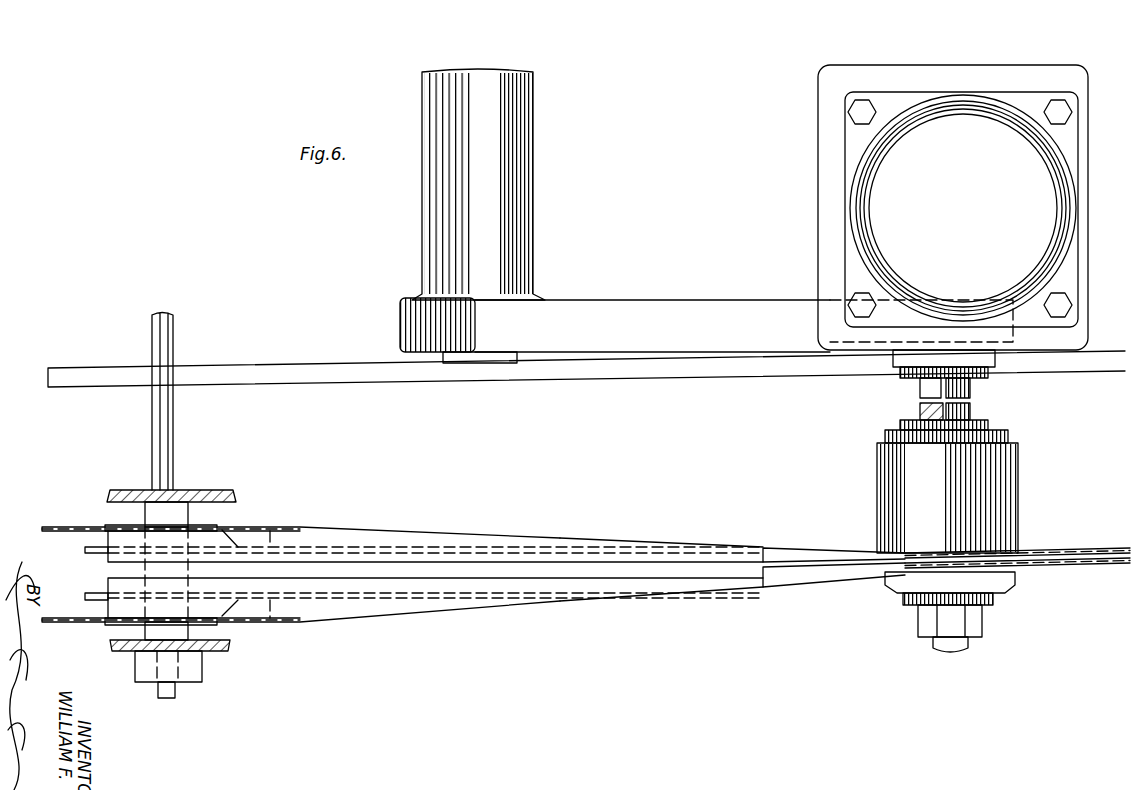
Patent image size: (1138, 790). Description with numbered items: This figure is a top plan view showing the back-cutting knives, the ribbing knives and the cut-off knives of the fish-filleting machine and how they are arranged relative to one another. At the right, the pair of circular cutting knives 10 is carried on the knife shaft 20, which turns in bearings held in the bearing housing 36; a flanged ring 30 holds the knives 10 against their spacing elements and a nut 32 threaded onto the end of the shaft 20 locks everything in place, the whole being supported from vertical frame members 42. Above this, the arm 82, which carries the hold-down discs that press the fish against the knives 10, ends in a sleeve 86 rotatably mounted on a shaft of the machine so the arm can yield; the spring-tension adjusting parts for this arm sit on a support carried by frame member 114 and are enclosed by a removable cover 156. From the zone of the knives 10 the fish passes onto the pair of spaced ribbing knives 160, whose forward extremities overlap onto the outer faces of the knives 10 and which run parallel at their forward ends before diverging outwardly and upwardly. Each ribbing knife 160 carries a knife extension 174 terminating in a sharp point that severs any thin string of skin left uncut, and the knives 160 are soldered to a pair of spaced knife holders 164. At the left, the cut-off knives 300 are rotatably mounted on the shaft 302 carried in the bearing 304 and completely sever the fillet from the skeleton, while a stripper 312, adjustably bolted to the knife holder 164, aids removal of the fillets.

The circular cutting knives 10 is at (1058, 582).
The knife shaft 20 is at (966, 410).
The flanged ring 30 is at (1000, 584).
The nut 32 is at (982, 620).
The bearing housing 36 is at (1018, 492).
The vertical frame members 42 is at (516, 379).
The arm 82 is at (745, 343).
The sleeve 86 is at (524, 197).
The frame member 114 is at (832, 180).
The cover 156 is at (1060, 234).
The ribbing knives 160 is at (698, 585).
The knife holders 164 is at (96, 593).
The knife extension 174 is at (814, 590).
The cut-off knives 300 is at (75, 533).
The shaft 302 is at (166, 705).
The bearing 304 is at (203, 672).
The stripper 312 is at (218, 626).